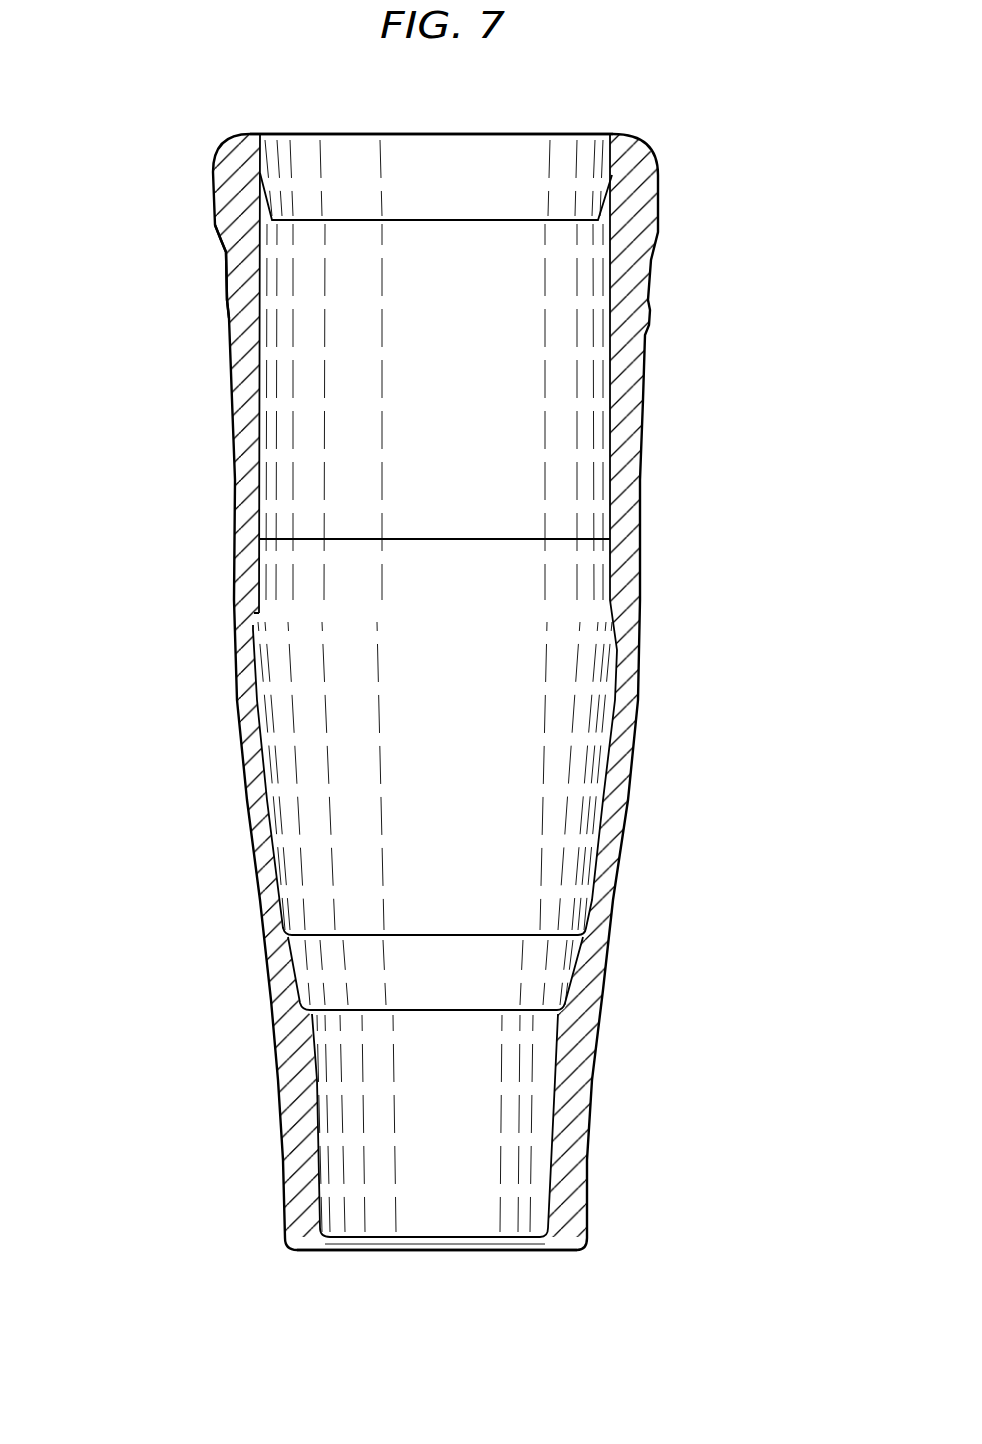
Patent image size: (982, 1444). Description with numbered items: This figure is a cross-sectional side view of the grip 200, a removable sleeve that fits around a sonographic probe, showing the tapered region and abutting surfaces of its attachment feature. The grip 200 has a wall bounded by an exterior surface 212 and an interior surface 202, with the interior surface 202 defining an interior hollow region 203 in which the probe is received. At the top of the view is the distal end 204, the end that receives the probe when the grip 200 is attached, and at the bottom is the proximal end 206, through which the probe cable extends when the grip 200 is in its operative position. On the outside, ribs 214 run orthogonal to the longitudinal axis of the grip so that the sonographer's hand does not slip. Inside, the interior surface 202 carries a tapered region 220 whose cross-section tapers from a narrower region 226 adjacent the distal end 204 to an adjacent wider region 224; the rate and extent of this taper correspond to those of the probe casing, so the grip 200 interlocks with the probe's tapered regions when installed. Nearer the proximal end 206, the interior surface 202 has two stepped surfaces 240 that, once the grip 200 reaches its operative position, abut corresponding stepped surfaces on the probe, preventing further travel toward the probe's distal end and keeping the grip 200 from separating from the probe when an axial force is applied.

The grip 200 is at (752, 182).
The distal end 204 is at (494, 128).
The ribs 214 is at (222, 318).
The tapered region 220 is at (117, 223).
The narrower region 226 is at (675, 220).
The wider region 224 is at (675, 617).
The exterior surface 212 is at (652, 700).
The interior hollow region 203 is at (451, 704).
The interior surface 202 is at (308, 851).
The stepped surfaces 240 is at (520, 1010).
The proximal end 206 is at (396, 1254).